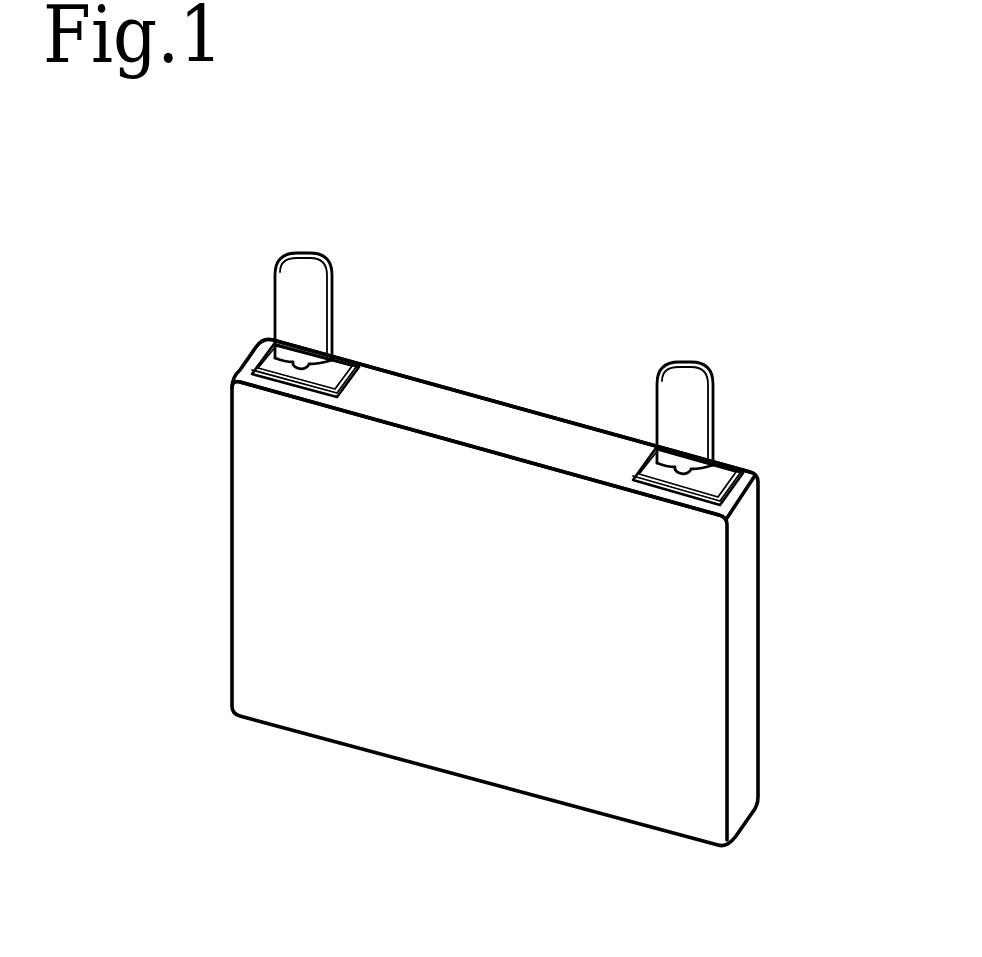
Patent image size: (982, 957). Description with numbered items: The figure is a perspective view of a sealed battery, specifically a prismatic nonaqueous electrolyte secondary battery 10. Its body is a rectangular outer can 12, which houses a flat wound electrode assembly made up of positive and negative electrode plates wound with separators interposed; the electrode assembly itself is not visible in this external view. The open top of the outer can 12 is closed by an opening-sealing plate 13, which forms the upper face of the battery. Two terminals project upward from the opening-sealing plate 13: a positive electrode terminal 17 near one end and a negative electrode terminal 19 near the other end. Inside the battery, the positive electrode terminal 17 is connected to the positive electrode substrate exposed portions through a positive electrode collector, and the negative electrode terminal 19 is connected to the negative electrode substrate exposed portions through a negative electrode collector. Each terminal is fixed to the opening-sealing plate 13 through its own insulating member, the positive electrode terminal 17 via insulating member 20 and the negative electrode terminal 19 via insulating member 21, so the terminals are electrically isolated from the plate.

The prismatic nonaqueous electrolyte secondary battery 10 is at (123, 228).
The outer can 12 is at (313, 685).
The opening-sealing plate 13 is at (535, 438).
The positive electrode terminal 17 is at (302, 293).
The negative electrode terminal 19 is at (670, 387).
The insulating member 20 is at (362, 362).
The insulating member 21 is at (742, 470).